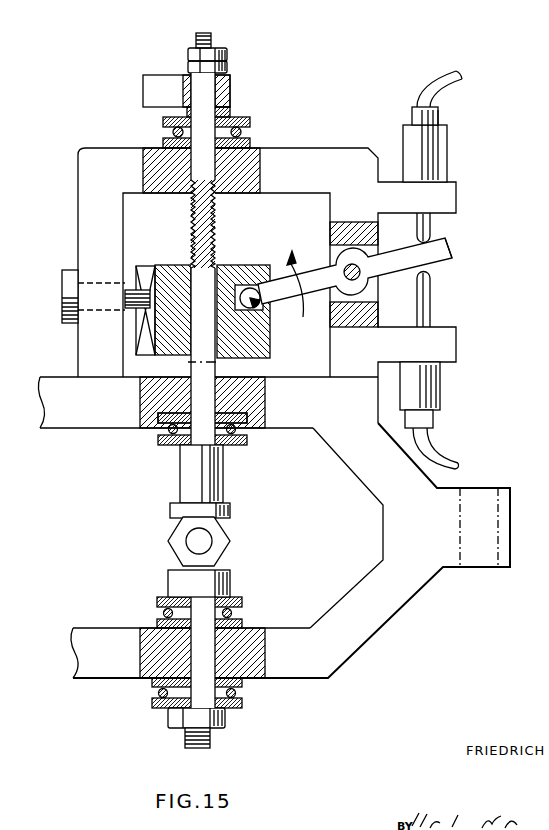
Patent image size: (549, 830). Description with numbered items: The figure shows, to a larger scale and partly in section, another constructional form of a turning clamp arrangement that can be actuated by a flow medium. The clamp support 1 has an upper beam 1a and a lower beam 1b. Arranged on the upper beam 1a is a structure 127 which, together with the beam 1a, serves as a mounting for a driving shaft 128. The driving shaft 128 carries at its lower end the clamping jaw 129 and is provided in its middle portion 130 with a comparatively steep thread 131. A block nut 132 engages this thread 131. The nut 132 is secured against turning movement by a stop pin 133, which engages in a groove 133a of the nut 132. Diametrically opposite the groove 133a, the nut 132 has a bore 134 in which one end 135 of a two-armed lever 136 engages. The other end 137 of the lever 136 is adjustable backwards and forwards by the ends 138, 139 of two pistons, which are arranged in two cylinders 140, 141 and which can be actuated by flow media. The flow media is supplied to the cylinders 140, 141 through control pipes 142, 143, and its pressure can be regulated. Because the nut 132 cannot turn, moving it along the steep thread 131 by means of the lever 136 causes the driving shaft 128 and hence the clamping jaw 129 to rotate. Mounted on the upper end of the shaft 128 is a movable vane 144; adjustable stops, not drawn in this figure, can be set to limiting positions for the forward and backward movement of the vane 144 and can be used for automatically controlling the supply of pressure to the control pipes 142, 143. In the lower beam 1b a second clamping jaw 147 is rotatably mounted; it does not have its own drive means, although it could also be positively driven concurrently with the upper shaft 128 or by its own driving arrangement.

The clamp support 1 is at (369, 535).
The upper beam 1a is at (63, 415).
The lower beam 1b is at (97, 640).
The structure 127 is at (86, 138).
The driving shaft 128 is at (207, 33).
The clamping jaw 129 is at (178, 503).
The middle portion 130 is at (218, 258).
The thread 131 is at (219, 233).
The block nut 132 is at (173, 273).
The stop pin 133 is at (65, 290).
The groove 133a is at (138, 342).
The bore 134 is at (263, 342).
The end of lever 135 is at (250, 309).
The two-armed lever 136 is at (317, 275).
The other end of lever 137 is at (444, 258).
The piston end 138 is at (432, 230).
The piston end 139 is at (433, 308).
The cylinder 140 is at (430, 167).
The cylinder 141 is at (428, 397).
The control pipe 142 is at (444, 81).
The control pipe 143 is at (446, 457).
The movable vane 144 is at (165, 82).
The clamping jaw 147 is at (177, 585).